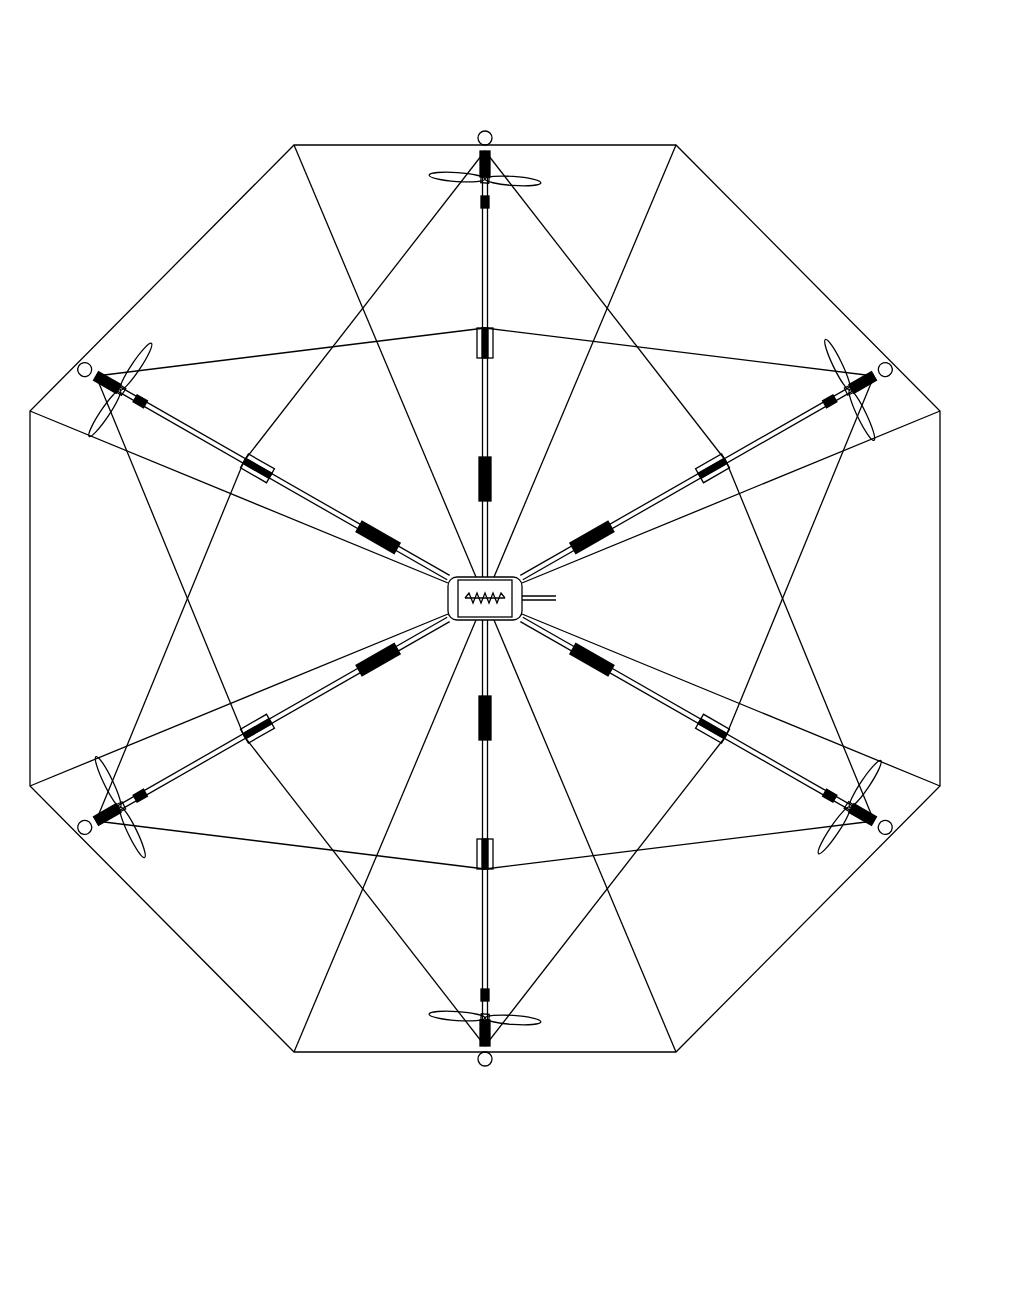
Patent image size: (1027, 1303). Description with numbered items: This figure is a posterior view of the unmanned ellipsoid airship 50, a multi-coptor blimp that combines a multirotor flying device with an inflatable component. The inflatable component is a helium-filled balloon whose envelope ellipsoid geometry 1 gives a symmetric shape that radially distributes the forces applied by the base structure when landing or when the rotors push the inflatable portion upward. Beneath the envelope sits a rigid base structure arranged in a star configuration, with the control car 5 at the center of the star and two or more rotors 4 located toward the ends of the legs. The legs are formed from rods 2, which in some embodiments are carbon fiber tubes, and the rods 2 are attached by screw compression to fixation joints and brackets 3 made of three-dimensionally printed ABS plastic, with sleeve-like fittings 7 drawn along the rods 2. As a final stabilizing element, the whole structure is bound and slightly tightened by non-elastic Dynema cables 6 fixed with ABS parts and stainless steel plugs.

The unmanned ellipsoid airship 50 is at (240, 130).
The envelope ellipsoid geometry 1 is at (146, 915).
The rod 2 is at (478, 363).
The fixation joint/bracket 3 is at (468, 146).
The rotor 4 is at (108, 803).
The control car 5 is at (436, 598).
The non-elastic Dynema cable 6 is at (688, 773).
The arm sleeve / joint 7 is at (705, 463).